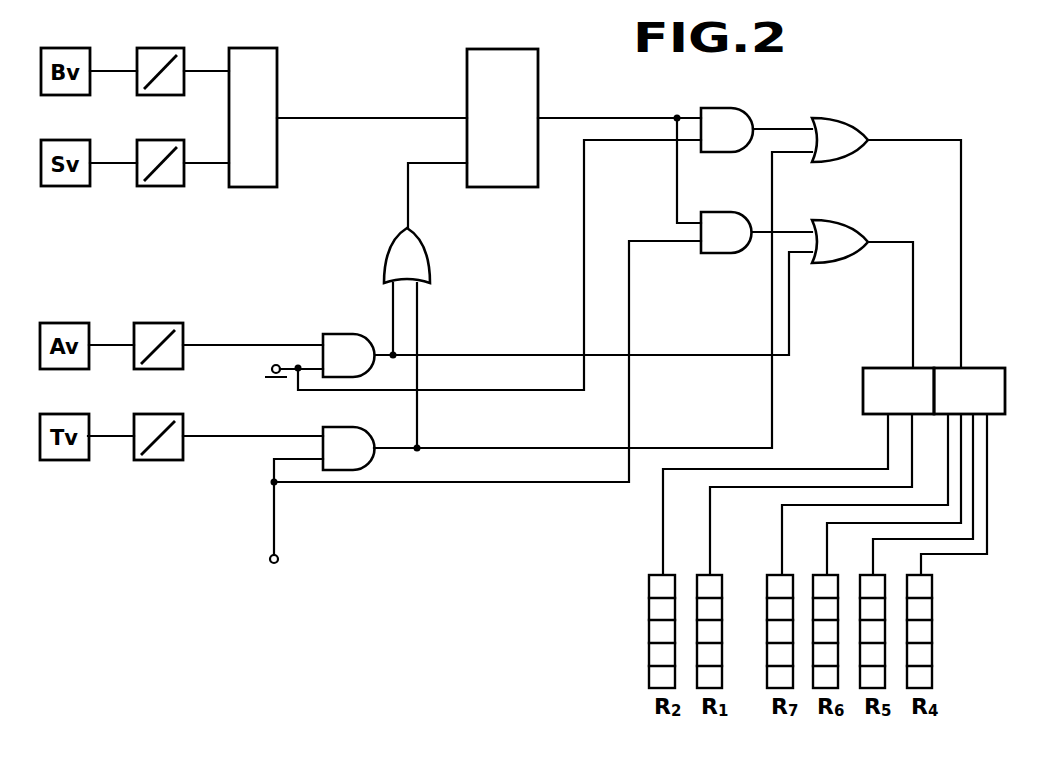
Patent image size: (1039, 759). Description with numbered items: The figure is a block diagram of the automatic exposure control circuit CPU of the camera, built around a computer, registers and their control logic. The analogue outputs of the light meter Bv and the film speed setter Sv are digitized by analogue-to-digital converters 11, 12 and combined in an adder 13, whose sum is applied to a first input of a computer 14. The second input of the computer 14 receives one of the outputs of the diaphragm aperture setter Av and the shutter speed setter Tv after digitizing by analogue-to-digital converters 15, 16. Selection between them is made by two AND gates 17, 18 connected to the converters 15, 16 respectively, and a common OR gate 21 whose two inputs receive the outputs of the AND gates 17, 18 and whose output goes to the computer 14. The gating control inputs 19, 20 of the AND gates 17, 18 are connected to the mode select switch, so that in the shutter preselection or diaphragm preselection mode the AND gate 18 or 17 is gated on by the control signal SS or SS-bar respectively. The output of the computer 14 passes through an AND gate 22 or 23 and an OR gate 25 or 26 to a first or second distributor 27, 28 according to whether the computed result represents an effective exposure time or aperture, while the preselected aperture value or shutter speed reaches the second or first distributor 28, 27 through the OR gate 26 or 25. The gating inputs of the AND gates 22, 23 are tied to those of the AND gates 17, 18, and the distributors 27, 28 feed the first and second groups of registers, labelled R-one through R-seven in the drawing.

The analogue-to-digital converter 11 is at (160, 53).
The analogue-to-digital converter 12 is at (160, 145).
The adder 13 is at (253, 117).
The computer 14 is at (502, 118).
The analogue-to-digital converter 15 is at (183, 335).
The analogue-to-digital converter 16 is at (183, 449).
The AND gate 17 is at (348, 355).
The AND gate 18 is at (348, 448).
The gating control input 19 is at (272, 369).
The gating control input 20 is at (278, 560).
The OR gate 21 is at (407, 255).
The AND gate 22 is at (727, 130).
The AND gate 23 is at (726, 232).
The OR gate 25 is at (840, 140).
The OR gate 26 is at (840, 241).
The first distributor 27 is at (969, 391).
The second distributor 28 is at (898, 391).